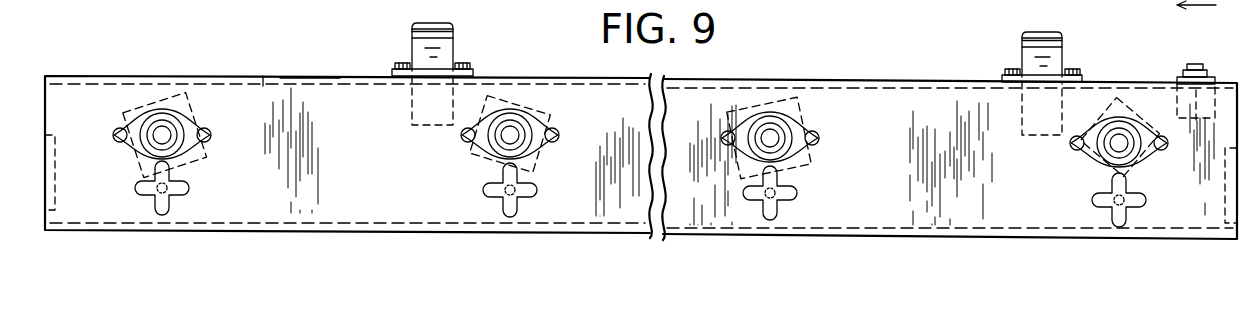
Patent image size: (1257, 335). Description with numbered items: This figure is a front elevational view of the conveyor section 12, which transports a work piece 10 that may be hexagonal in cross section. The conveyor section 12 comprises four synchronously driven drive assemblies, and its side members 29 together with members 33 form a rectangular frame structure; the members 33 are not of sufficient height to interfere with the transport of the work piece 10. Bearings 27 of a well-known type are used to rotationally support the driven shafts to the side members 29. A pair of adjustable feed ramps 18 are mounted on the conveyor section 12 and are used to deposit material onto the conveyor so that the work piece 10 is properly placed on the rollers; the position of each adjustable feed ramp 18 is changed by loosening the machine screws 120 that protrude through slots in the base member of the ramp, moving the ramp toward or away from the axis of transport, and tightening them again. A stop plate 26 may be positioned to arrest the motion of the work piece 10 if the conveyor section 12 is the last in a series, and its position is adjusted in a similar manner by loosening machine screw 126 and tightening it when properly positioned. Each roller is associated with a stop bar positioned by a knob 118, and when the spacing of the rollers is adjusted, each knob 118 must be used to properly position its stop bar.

The work piece 10 is at (1198, 0).
The conveyor section 12 is at (346, 236).
The adjustable feed ramp 18 is at (452, 37).
The stop plate 26 is at (1231, 80).
The bearings 27 is at (192, 128).
The side members 29 is at (317, 91).
The members 33 is at (58, 143).
The knob 118 is at (180, 185).
The machine screws 120 is at (405, 64).
The machine screw 126 is at (1194, 66).